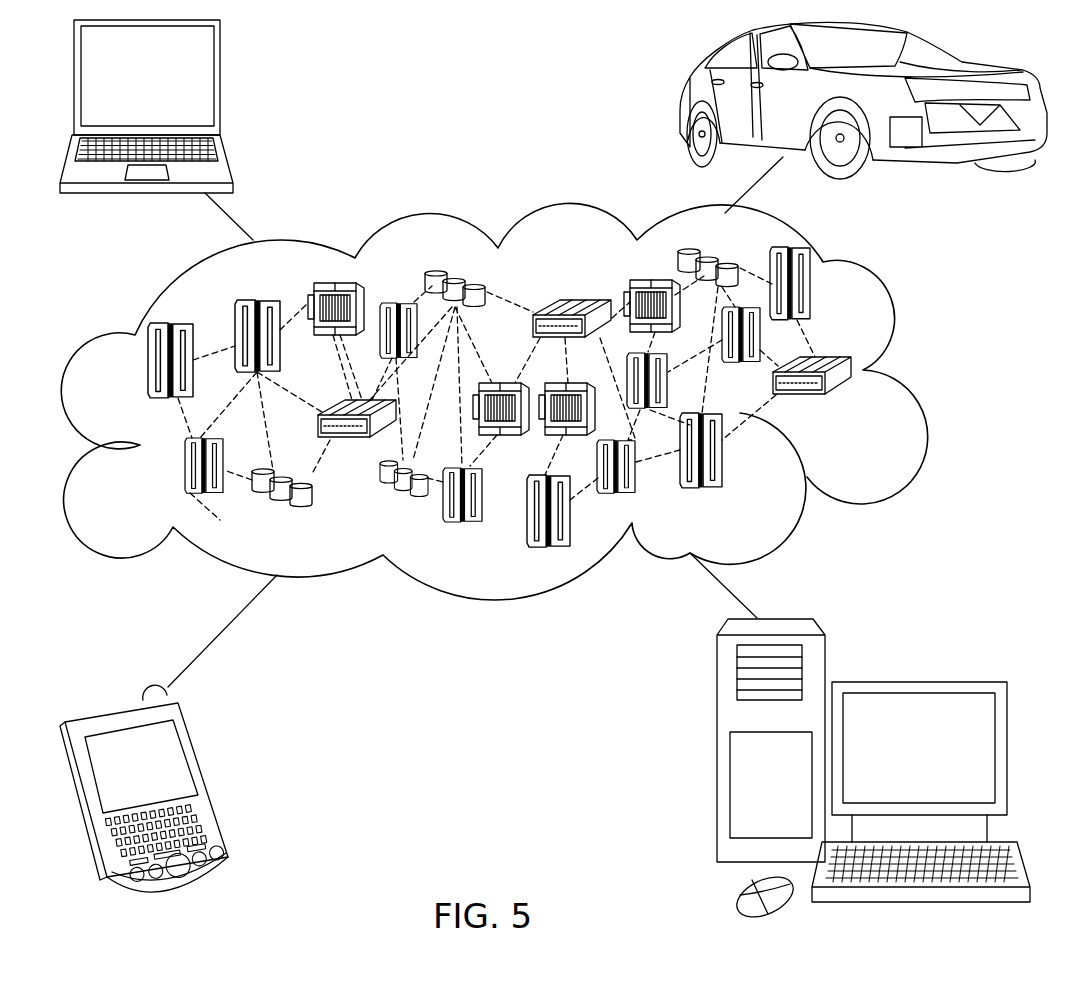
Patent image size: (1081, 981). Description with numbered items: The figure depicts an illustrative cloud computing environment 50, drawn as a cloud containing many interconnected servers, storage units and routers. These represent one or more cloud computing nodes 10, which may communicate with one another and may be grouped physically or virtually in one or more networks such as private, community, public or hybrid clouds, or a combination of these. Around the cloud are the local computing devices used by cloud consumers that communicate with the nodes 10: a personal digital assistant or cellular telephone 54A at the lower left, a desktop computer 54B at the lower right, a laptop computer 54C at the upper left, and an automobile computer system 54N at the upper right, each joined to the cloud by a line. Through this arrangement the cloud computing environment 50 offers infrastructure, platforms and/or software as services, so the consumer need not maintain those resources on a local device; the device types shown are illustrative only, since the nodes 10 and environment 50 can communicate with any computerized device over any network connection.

The cloud computing node 10 is at (855, 406).
The cloud computing environment 50 is at (918, 373).
The personal digital assistant or cellular telephone 54A is at (208, 778).
The desktop computer 54B is at (915, 680).
The laptop computer 54C is at (220, 84).
The automobile computer system 54N is at (688, 100).